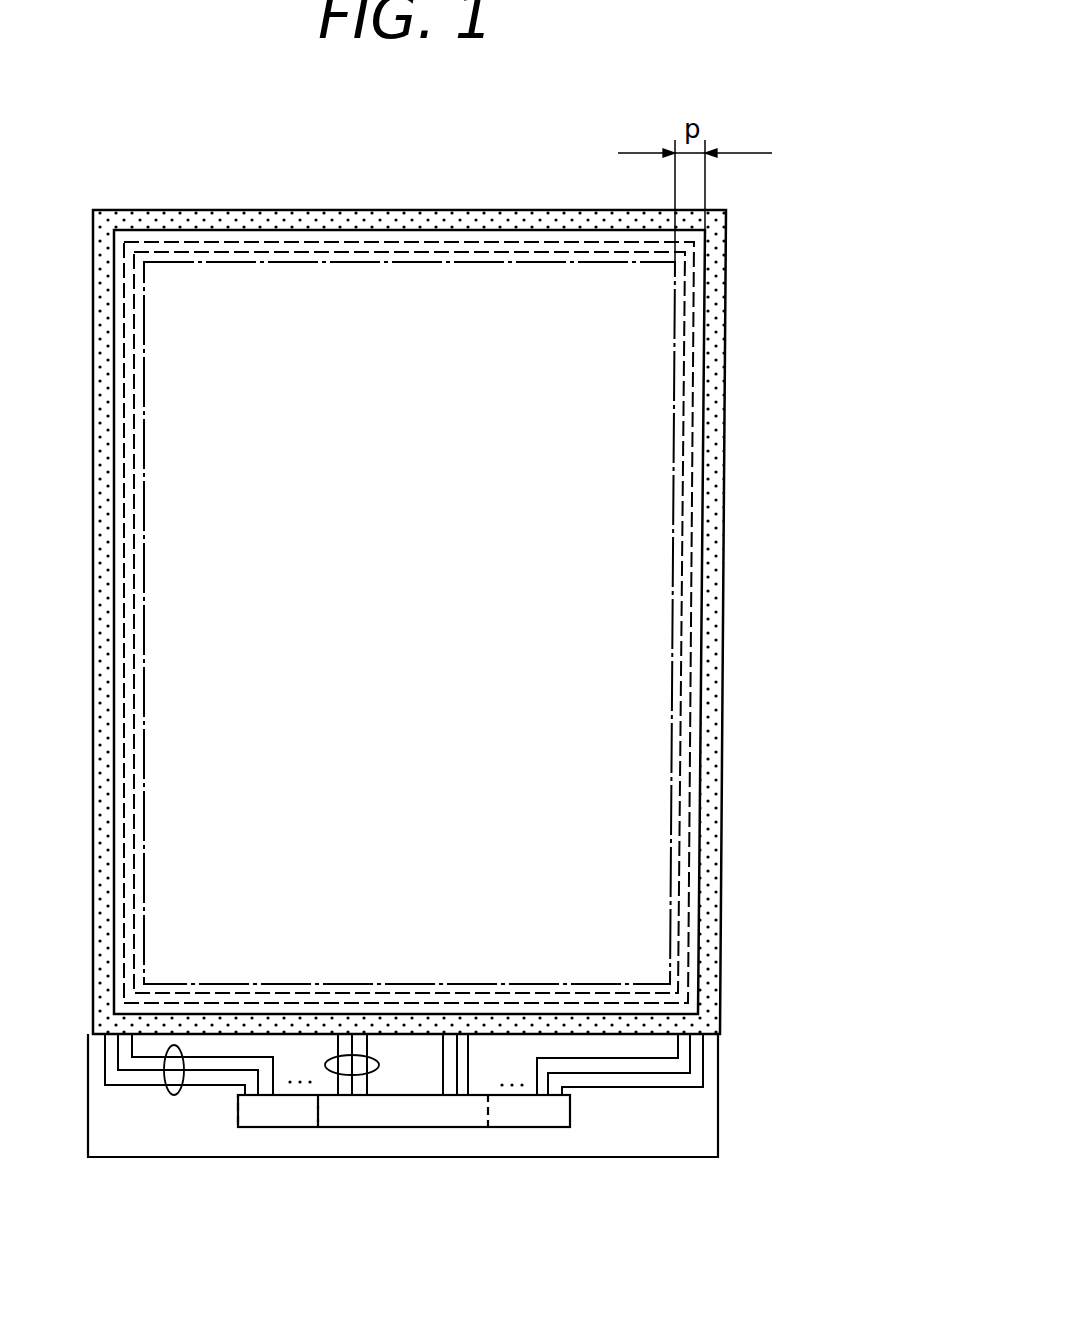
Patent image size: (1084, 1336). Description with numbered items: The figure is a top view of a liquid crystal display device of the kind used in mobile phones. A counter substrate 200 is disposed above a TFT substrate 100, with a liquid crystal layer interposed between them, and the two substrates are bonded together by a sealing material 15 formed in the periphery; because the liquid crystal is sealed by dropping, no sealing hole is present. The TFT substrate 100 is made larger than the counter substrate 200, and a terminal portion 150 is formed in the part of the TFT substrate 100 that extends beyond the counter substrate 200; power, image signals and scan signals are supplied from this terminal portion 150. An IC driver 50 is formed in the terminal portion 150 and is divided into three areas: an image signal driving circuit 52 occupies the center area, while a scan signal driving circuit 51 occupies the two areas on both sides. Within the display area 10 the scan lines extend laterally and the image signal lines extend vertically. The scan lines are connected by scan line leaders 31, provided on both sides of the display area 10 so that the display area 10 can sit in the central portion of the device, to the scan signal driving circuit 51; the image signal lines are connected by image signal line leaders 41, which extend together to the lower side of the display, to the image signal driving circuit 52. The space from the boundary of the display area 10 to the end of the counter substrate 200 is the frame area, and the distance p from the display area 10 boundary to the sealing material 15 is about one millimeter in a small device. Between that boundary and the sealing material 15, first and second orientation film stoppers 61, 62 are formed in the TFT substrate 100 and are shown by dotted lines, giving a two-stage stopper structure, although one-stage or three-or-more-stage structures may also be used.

The display area 10 is at (675, 360).
The sealing material 15 is at (712, 660).
The scan line leaders 31 is at (170, 1095).
The image signal line leaders 41 is at (333, 1080).
The IC driver 50 is at (467, 1127).
The scan signal driving circuit 51 is at (257, 1113).
The image signal driving circuit 52 is at (401, 1113).
The first orientation film stopper 61 is at (687, 437).
The second orientation film stopper 62 is at (693, 520).
The TFT substrate 100 is at (718, 1125).
The terminal portion 150 is at (655, 1158).
The counter substrate 200 is at (722, 812).